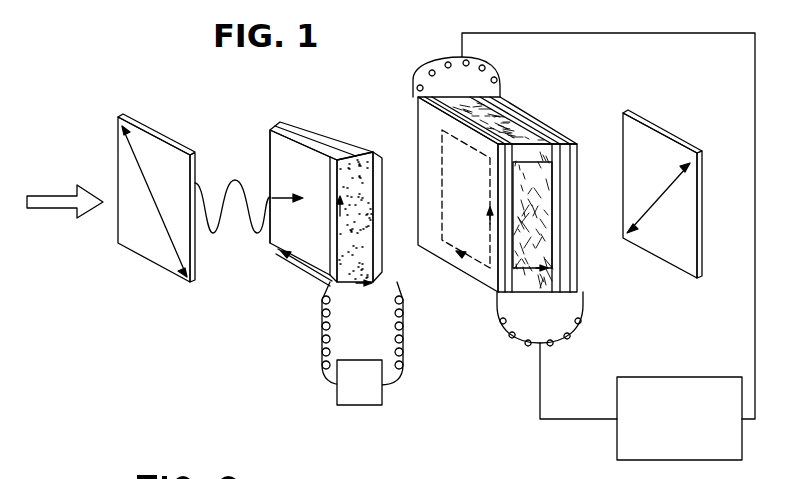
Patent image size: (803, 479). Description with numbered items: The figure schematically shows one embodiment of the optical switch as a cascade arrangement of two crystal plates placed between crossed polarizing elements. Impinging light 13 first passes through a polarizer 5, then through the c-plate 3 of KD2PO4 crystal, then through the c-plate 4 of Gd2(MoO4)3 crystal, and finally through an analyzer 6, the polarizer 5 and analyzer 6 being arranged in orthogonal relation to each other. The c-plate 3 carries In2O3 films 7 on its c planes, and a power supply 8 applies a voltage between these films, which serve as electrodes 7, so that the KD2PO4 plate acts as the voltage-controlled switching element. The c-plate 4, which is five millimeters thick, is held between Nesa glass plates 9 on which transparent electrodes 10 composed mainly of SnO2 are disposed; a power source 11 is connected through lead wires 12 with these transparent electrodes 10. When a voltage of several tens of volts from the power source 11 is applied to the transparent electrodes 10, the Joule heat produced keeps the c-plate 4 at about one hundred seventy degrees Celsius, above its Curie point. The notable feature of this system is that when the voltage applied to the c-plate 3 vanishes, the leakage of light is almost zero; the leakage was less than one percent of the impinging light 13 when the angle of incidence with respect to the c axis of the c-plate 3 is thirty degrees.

The c-plate of KD2PO4 3 is at (307, 193).
The c-plate of Gd2(MoO4)3 4 is at (527, 284).
The polarizer 5 is at (140, 125).
The analyzer 6 is at (648, 120).
The In2O3 films 7 is at (272, 142).
The power supply 8 is at (368, 398).
The Nesa glass plates 9 is at (498, 209).
The transparent electrodes 10 is at (497, 288).
The power source 11 is at (649, 377).
The lead wires 12 is at (497, 76).
The impinging light 13 is at (53, 196).